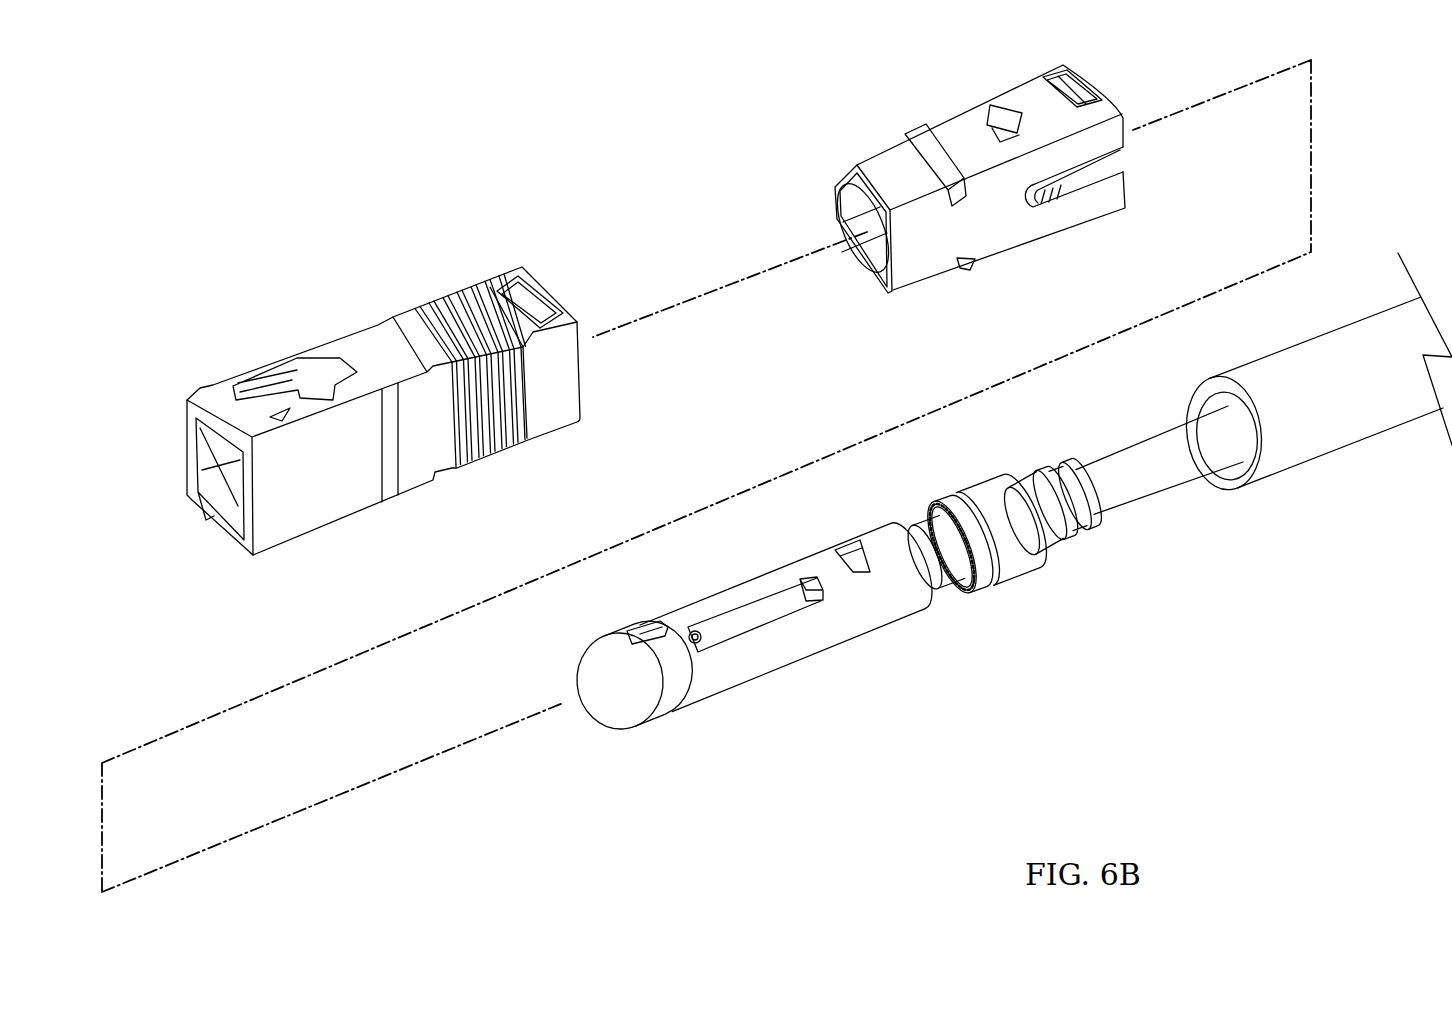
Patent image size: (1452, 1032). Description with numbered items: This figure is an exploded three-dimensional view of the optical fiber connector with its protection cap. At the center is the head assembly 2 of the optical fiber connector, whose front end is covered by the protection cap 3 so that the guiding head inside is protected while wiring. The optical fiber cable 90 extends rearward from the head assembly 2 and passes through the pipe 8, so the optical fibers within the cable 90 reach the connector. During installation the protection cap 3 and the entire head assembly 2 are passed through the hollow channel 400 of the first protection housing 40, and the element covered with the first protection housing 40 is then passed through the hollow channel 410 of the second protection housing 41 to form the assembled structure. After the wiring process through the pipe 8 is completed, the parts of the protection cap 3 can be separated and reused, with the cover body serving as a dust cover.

The head assembly 2 is at (952, 472).
The protection cap 3 is at (579, 657).
The pipe 8 is at (1342, 428).
The optical fiber cable 90 is at (1125, 500).
The first protection housing 40 is at (843, 159).
The hollow channel 400 is at (860, 238).
The second protection housing 41 is at (482, 274).
The hollow channel 410 is at (237, 467).